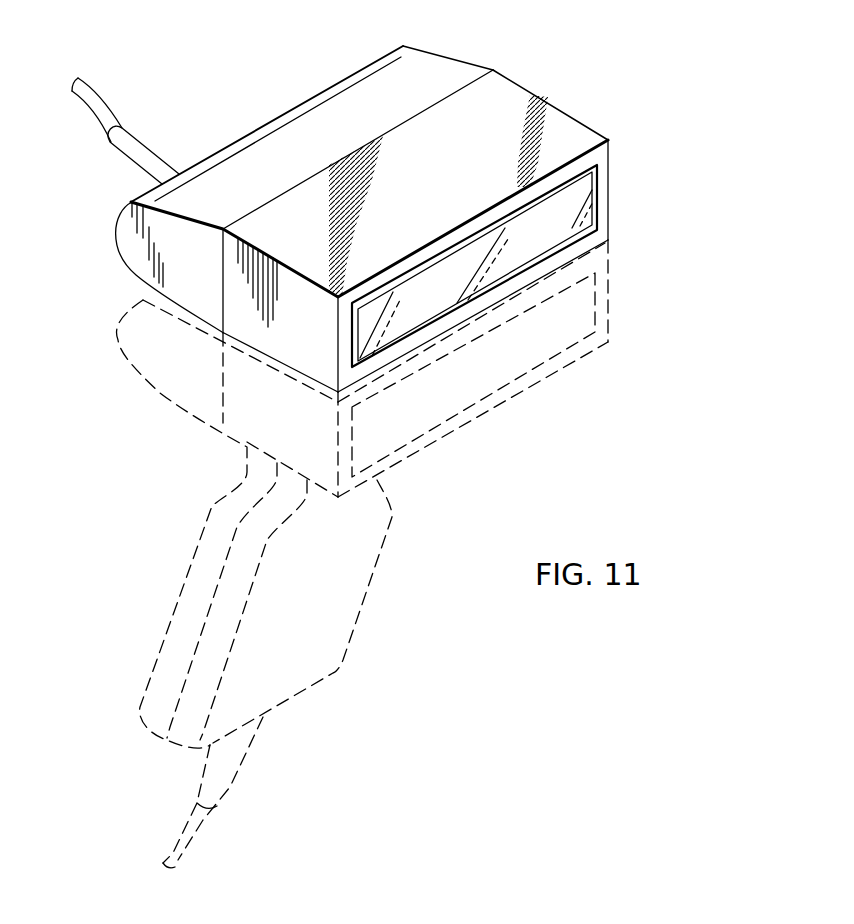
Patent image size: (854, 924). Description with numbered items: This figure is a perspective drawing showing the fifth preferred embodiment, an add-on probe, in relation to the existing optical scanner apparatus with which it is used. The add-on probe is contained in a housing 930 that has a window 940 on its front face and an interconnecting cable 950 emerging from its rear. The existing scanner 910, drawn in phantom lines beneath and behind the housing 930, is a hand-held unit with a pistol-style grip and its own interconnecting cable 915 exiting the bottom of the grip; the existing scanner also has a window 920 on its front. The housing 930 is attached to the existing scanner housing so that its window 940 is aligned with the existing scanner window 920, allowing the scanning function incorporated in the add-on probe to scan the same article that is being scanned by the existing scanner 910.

The existing scanner 910 is at (215, 496).
The interconnecting cable 915 is at (237, 777).
The existing scanner window 920 is at (490, 377).
The housing 930 is at (510, 98).
The window 940 is at (542, 235).
The interconnecting cable 950 is at (148, 152).